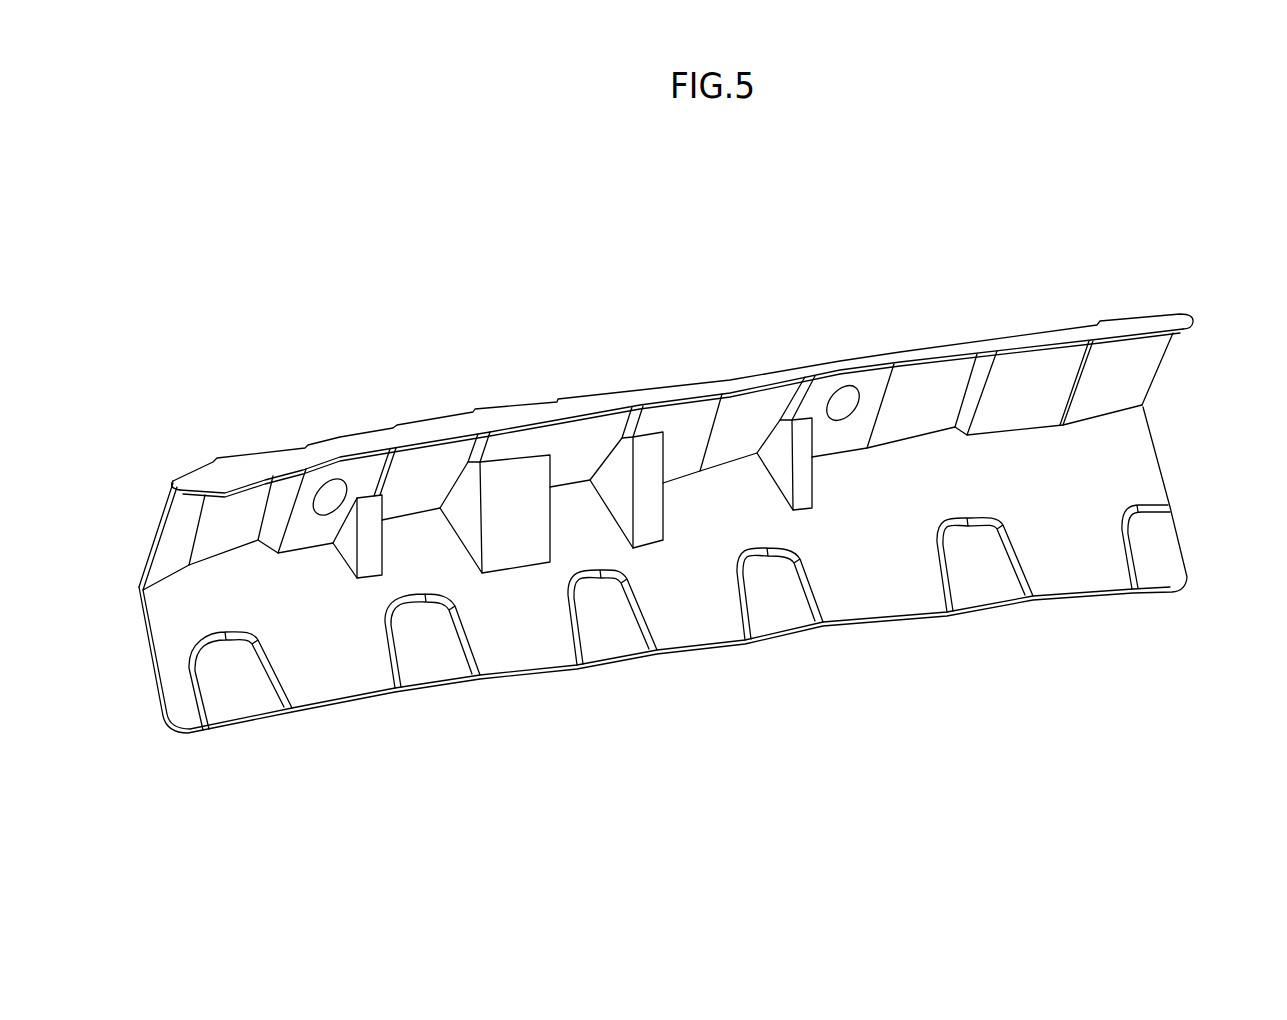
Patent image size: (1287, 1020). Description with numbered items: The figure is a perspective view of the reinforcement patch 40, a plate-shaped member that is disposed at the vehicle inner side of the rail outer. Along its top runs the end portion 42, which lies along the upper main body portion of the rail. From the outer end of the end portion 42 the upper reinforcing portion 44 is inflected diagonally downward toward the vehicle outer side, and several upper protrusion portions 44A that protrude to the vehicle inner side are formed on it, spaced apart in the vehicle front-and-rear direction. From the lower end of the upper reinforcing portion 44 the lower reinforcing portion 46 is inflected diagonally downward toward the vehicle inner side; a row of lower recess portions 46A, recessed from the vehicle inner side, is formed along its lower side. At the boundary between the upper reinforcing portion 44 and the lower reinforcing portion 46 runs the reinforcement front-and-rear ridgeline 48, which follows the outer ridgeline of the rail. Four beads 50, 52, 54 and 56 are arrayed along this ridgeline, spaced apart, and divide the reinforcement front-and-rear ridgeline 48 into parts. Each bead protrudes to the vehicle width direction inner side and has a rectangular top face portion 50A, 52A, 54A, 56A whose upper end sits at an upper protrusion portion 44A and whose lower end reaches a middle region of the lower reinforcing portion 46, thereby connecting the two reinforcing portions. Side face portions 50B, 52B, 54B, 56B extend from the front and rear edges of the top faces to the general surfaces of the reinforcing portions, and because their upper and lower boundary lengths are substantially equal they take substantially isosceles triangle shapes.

The reinforcement patch 40 is at (384, 242).
The end portion 42 is at (1185, 320).
The upper reinforcing portion 44 is at (693, 422).
The upper protrusion portion 44A is at (508, 442).
The lower reinforcing portion 46 is at (694, 607).
The lower recess portion 46A is at (421, 663).
The reinforcement front-and-rear ridgeline 48 is at (1104, 412).
The bead 50 is at (321, 576).
The top face portion 50A is at (372, 566).
The side face portion 50B is at (340, 537).
The bead 52 is at (472, 552).
The top face portion 52A is at (515, 552).
The side face portion 52B is at (461, 521).
The bead 54 is at (646, 532).
The top face portion 54A is at (650, 525).
The side face portion 54B is at (594, 492).
The bead 56 is at (798, 503).
The top face portion 56A is at (805, 488).
The side face portion 56B is at (781, 471).